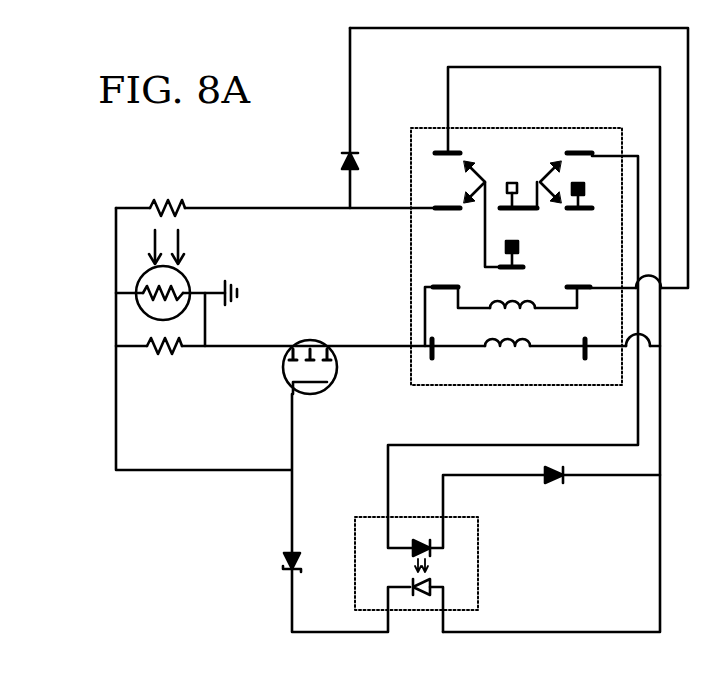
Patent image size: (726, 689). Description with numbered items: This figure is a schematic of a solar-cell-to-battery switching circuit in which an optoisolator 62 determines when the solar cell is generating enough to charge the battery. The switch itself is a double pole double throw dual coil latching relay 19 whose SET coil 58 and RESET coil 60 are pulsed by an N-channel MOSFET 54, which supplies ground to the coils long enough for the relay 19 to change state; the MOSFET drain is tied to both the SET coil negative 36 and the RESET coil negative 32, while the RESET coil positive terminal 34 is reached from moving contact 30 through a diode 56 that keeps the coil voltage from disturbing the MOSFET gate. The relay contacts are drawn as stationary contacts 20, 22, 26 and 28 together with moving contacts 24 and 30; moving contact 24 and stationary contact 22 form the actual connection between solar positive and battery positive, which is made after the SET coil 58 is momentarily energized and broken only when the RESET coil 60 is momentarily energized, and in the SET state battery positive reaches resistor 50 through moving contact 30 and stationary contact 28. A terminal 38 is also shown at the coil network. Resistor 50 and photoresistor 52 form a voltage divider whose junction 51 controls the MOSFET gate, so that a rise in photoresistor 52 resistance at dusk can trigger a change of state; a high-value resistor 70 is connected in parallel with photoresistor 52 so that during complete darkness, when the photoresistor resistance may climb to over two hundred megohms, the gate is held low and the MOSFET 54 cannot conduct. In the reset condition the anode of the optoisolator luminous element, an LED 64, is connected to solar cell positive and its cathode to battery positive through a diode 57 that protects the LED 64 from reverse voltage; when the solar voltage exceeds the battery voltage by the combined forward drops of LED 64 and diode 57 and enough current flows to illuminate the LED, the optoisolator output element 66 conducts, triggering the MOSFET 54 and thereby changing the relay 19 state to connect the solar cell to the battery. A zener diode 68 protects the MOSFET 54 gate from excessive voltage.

The latching relay 19 is at (515, 124).
The stationary contact 20 is at (437, 154).
The stationary contact 22 is at (437, 209).
The moving contact 24 is at (522, 267).
The stationary contact 26 is at (592, 154).
The stationary contact 28 is at (592, 209).
The moving contact 30 is at (526, 216).
The RESET coil negative 32 is at (452, 297).
The RESET coil positive terminal 34 is at (566, 298).
The SET coil negative 36 is at (433, 342).
The relay terminal 38 is at (584, 342).
The resistor 50 is at (163, 203).
The junction 51 is at (136, 293).
The photoresistor 52 is at (183, 274).
The N-channel MOSFET 54 is at (328, 394).
The diode 56 is at (338, 160).
The diode 57 is at (560, 480).
The SET coil 58 is at (507, 350).
The RESET coil 60 is at (520, 312).
The optoisolator 62 is at (484, 563).
The luminous element 64 is at (420, 540).
The optoisolator output element 66 is at (414, 594).
The zener diode 68 is at (284, 568).
The resistor 70 is at (162, 354).